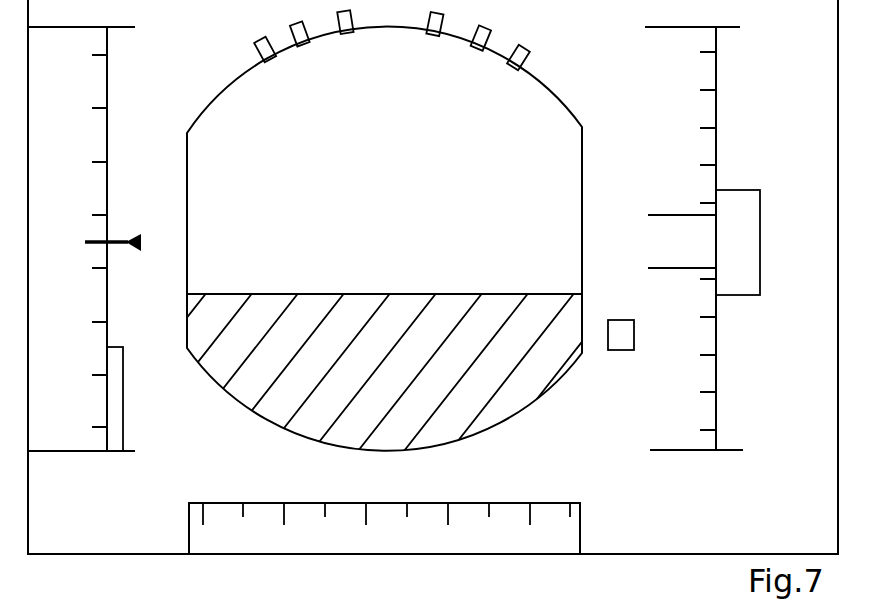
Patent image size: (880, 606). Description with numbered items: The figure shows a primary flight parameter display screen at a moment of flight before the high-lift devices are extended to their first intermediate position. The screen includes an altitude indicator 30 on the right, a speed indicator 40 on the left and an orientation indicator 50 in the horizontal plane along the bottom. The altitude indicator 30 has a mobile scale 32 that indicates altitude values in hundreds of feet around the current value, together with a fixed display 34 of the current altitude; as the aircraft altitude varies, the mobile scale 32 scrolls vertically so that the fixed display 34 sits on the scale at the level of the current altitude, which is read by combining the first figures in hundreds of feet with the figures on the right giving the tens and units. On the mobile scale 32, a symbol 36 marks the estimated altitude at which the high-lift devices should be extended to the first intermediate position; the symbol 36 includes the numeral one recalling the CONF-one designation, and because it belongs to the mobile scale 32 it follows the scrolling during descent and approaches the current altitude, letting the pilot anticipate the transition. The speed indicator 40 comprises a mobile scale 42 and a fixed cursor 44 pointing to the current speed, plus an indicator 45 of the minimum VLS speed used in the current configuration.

The altitude indicator 30 is at (719, 232).
The mobile scale 32 is at (718, 370).
The fixed display 34 is at (761, 245).
The symbol 36 is at (620, 351).
The speed indicator 40 is at (108, 259).
The mobile scale 42 is at (107, 70).
The fixed cursor 44 is at (137, 236).
The indicator of the minimum VLS speed 45 is at (123, 347).
The orientation indicator 50 is at (176, 528).